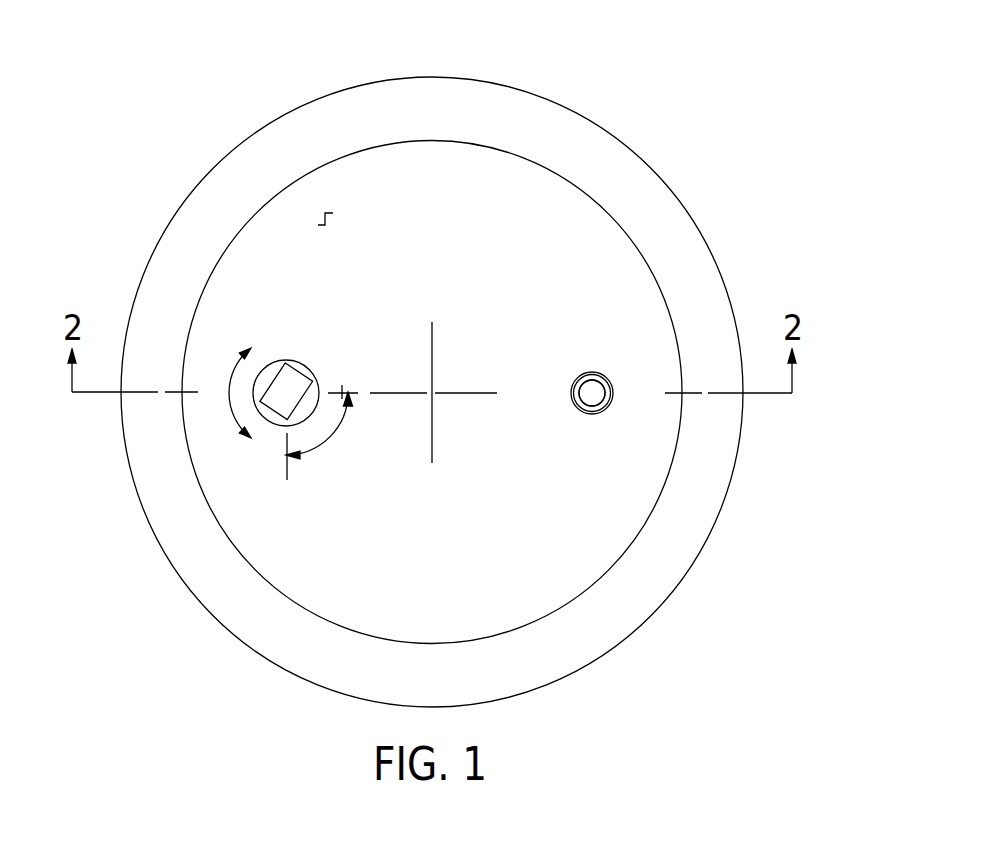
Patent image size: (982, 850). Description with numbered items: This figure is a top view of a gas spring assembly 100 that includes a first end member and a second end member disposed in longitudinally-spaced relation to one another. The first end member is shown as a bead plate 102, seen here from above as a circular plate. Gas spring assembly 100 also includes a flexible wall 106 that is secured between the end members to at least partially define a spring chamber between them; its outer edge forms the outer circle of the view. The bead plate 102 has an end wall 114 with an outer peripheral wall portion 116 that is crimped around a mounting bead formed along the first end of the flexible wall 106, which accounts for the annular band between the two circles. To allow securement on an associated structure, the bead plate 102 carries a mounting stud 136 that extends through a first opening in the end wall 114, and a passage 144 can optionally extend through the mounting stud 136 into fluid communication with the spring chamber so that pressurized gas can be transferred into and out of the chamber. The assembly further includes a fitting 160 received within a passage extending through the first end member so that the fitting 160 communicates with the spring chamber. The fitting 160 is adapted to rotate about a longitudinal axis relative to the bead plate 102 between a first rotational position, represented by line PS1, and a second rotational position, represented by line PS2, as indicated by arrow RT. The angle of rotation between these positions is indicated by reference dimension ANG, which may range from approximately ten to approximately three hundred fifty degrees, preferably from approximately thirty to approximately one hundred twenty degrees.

The gas spring assembly 100 is at (673, 106).
The bead plate 102 is at (518, 157).
The flexible wall 106 is at (266, 124).
The end wall 114 is at (321, 223).
The outer peripheral wall portion 116 is at (237, 262).
The mounting stud 136 is at (580, 378).
The passage 144 is at (596, 384).
The fitting 160 is at (292, 358).
The arrow RT is at (232, 392).
The reference dimension ANG is at (328, 442).
The line PS1 is at (287, 468).
The line PS2 is at (342, 386).